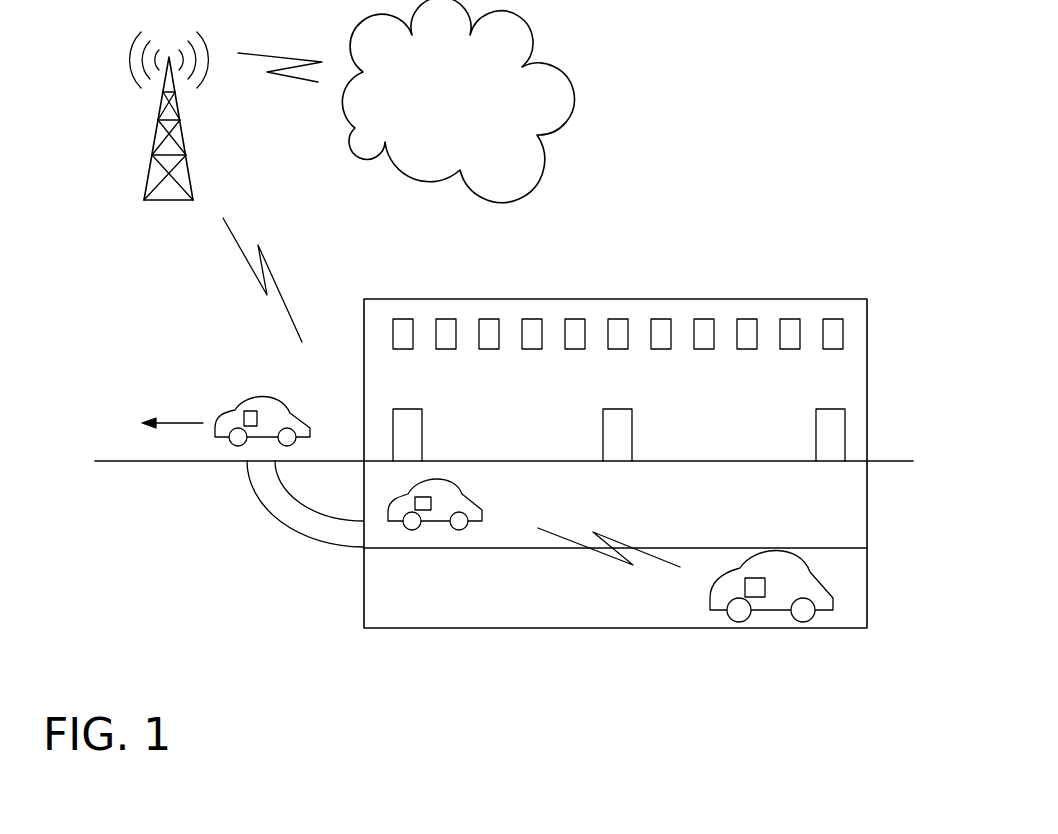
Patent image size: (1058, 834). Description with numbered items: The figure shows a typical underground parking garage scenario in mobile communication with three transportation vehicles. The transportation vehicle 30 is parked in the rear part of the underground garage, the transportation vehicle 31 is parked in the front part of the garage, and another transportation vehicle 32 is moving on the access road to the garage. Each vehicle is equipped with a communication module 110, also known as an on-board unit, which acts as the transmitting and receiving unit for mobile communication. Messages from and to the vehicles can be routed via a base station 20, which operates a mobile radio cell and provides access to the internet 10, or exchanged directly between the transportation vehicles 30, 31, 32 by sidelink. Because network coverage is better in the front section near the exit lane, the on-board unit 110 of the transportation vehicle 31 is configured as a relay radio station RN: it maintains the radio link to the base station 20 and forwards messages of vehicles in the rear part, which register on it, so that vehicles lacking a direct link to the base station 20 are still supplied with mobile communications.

The internet 10 is at (540, 106).
The base station 20 is at (184, 155).
The transportation vehicle 30 is at (834, 603).
The transportation vehicle 31 is at (393, 520).
The transportation vehicle 32 is at (305, 420).
The communication module 110 is at (241, 413).